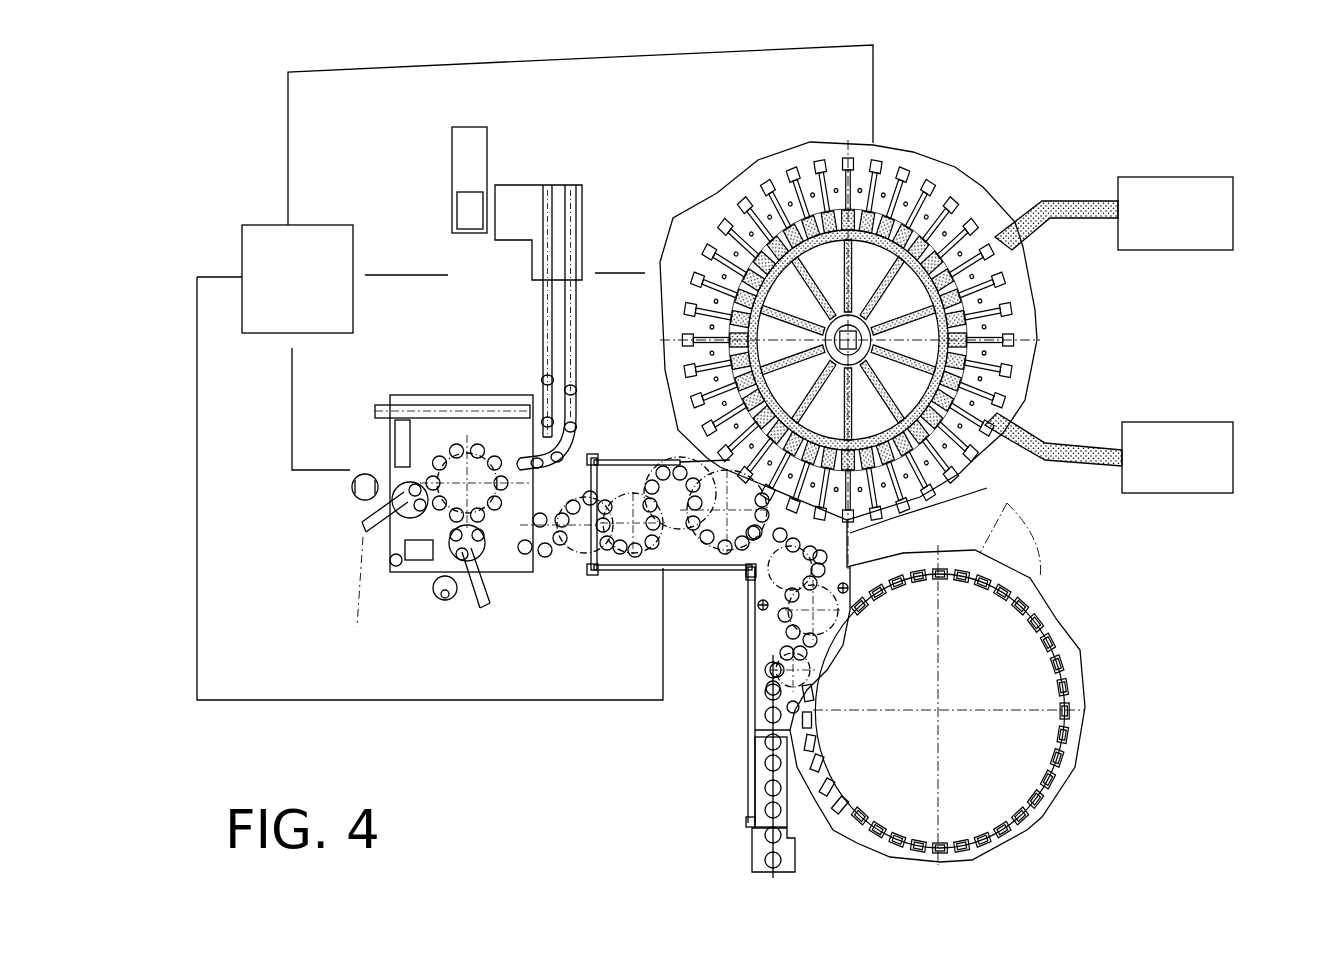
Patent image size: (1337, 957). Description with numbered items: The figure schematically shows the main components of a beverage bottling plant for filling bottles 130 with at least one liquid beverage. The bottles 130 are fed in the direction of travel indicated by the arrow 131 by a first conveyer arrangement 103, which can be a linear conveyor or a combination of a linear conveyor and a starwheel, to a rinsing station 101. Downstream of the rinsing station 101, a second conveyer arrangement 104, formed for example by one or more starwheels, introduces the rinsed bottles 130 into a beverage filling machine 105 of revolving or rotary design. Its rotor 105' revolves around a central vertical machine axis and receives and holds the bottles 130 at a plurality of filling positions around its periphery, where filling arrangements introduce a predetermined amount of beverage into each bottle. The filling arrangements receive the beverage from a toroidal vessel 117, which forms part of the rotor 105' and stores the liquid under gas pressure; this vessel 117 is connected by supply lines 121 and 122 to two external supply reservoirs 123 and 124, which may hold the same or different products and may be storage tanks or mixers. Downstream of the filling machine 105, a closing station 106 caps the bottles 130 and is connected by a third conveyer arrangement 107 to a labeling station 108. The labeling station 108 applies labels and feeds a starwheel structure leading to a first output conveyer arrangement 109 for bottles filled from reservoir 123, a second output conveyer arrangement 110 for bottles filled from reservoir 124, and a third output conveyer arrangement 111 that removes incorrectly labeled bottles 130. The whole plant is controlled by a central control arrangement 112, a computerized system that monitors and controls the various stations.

The rinsing station 101 is at (1093, 603).
The first conveyer arrangement 103 is at (788, 793).
The second conveyer arrangement 104 is at (791, 702).
The beverage filling machine 105 is at (908, 341).
The rotor 105' is at (847, 317).
The closing station 106 is at (652, 455).
The third conveyer arrangement 107 is at (600, 590).
The labeling station 108 is at (442, 517).
The first output conveyer arrangement 109 is at (578, 378).
The second output conveyer arrangement 110 is at (543, 368).
The third output conveyer arrangement 111 is at (427, 392).
The central control arrangement 112 is at (297, 279).
The toroidal vessel 117 is at (941, 503).
The supply line 121 is at (1068, 200).
The supply line 122 is at (1073, 440).
The external supply reservoir 123 is at (1225, 220).
The external supply reservoir 124 is at (1237, 460).
The bottles 130 is at (785, 808).
The arrow 131 is at (733, 785).